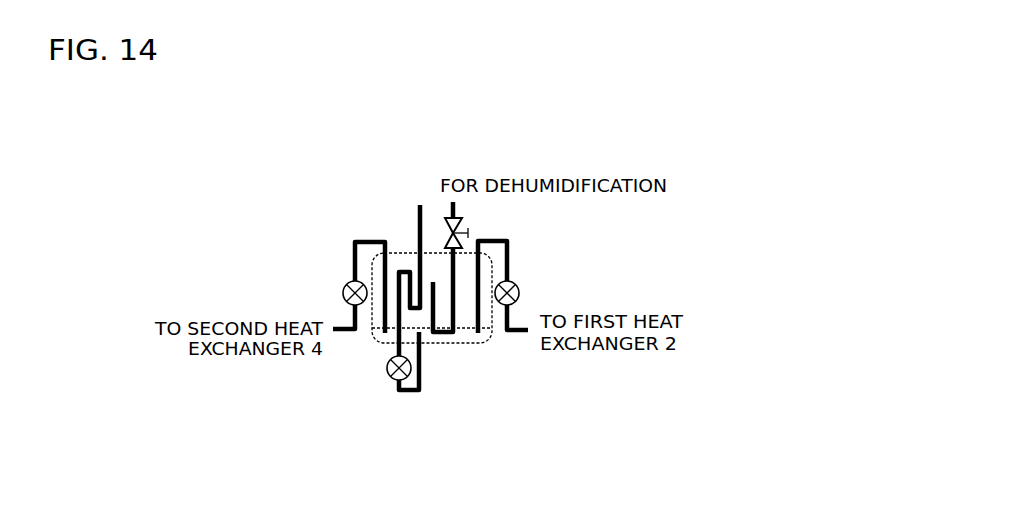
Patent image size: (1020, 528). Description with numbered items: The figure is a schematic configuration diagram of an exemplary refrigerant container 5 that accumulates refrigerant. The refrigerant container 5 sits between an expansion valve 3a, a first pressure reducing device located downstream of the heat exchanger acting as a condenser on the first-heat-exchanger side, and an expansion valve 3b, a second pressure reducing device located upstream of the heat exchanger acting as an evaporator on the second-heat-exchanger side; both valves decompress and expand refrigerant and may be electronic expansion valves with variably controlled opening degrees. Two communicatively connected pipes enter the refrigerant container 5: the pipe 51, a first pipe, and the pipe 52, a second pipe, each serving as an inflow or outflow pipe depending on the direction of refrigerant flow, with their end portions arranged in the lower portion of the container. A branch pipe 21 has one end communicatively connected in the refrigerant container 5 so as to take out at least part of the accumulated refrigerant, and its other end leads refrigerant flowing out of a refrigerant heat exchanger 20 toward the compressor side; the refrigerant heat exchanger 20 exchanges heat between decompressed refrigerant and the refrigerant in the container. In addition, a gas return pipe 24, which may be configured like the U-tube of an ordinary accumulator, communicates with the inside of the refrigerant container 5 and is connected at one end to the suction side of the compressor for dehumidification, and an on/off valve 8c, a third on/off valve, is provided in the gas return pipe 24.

The refrigerant container 5 is at (512, 416).
The expansion valve 3a is at (520, 287).
The expansion valve 3b is at (344, 291).
The on/off valve 8c is at (462, 227).
The refrigerant heat exchanger 20 is at (397, 303).
The branch pipe 21 is at (424, 340).
The gas return pipe 24 is at (452, 313).
The pipe 51 is at (484, 317).
The pipe 52 is at (378, 323).